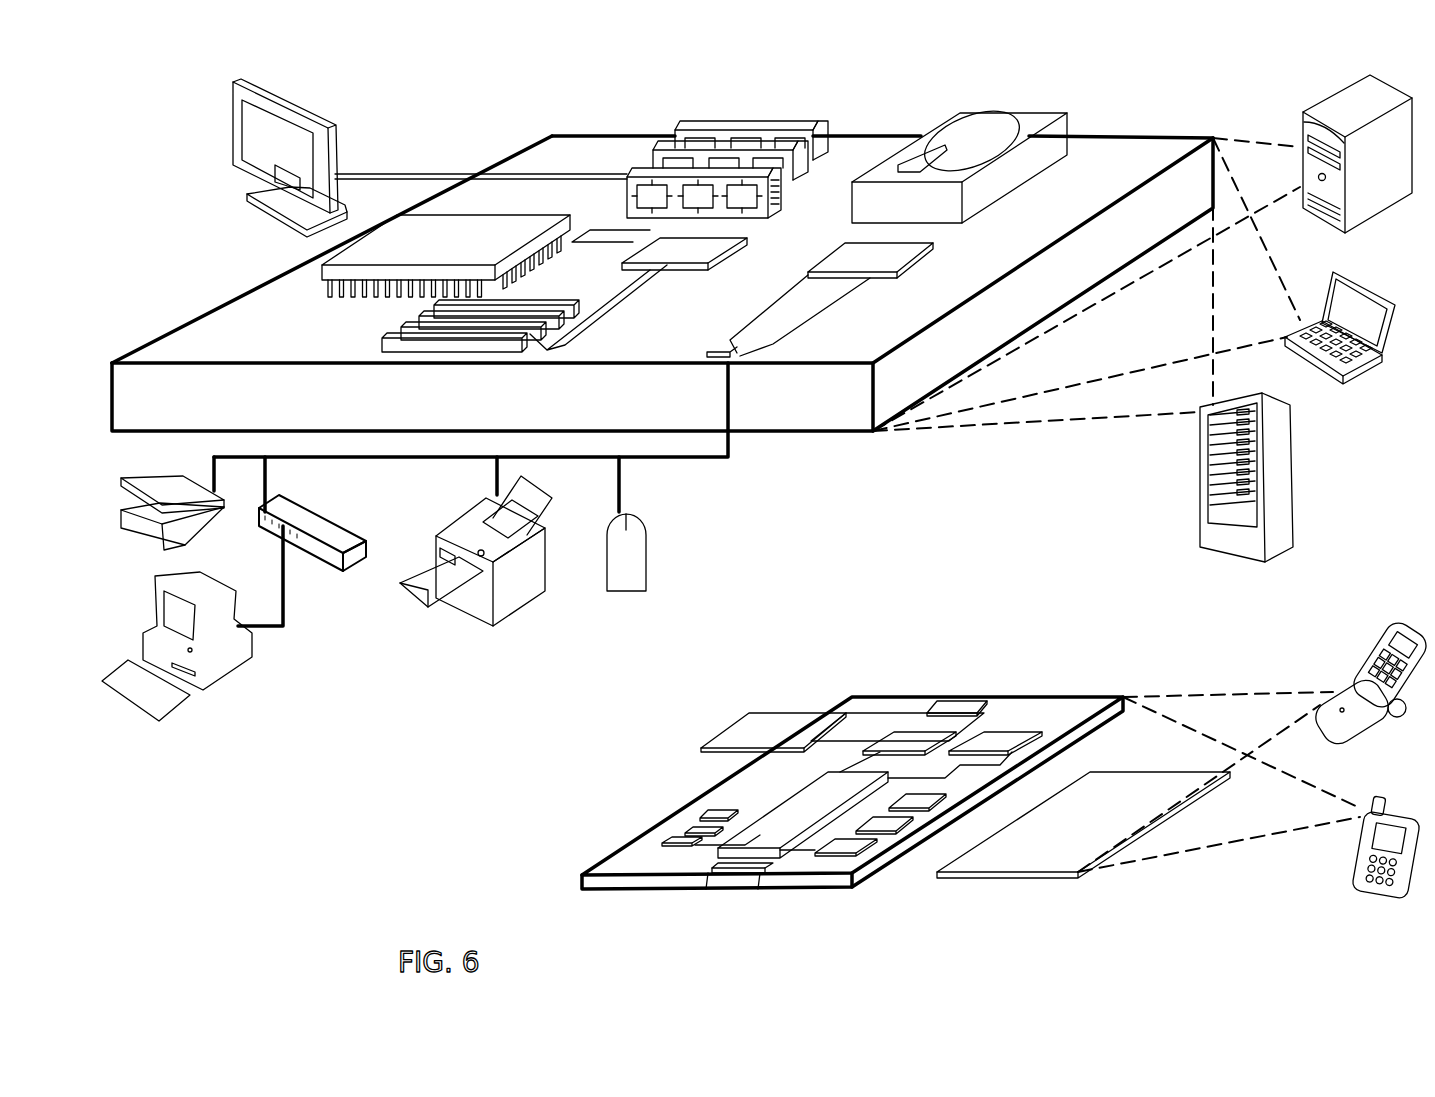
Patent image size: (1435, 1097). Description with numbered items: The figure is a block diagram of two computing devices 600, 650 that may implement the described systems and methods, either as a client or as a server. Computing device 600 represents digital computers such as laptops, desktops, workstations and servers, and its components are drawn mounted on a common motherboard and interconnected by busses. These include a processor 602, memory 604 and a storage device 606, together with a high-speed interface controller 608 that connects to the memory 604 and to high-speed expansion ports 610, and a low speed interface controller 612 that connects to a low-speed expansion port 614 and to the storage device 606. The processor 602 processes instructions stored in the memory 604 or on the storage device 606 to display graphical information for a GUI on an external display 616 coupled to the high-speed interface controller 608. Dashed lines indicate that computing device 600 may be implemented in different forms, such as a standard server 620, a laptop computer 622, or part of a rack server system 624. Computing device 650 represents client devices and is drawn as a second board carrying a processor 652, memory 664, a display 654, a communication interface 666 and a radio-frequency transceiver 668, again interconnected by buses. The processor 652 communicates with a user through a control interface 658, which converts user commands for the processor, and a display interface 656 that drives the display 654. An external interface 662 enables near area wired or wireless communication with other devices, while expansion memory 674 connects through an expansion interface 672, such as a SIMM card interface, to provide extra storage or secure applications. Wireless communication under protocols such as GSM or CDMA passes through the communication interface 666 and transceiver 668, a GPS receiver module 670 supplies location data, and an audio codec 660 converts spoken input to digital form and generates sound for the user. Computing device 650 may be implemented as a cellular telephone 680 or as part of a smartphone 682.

The computing device 600 is at (468, 110).
The processor 602 is at (322, 280).
The memory 604 is at (695, 128).
The storage device 606 is at (950, 114).
The high-speed interface controller 608 is at (660, 252).
The high-speed expansion ports 610 is at (400, 327).
The low speed interface controller 612 is at (870, 256).
The low-speed expansion port 614 is at (738, 365).
The display 616 is at (232, 90).
The standard server 620 is at (1300, 113).
The laptop computer 622 is at (1335, 271).
The rack server system 624 is at (1200, 493).
The computing device 650 is at (833, 675).
The processor 652 is at (760, 860).
The display 654 is at (1077, 875).
The display interface 656 is at (865, 852).
The control interface 658 is at (913, 830).
The audio codec 660 is at (918, 806).
The external interface 662 is at (742, 878).
The memory 664 is at (685, 833).
The communication interface 666 is at (912, 740).
The radio-frequency transceiver 668 is at (993, 738).
The GPS receiver module 670 is at (953, 697).
The expansion interface 672 is at (822, 712).
The expansion memory 674 is at (753, 713).
The cellular telephone 680 is at (1388, 630).
The smartphone 682 is at (1368, 787).